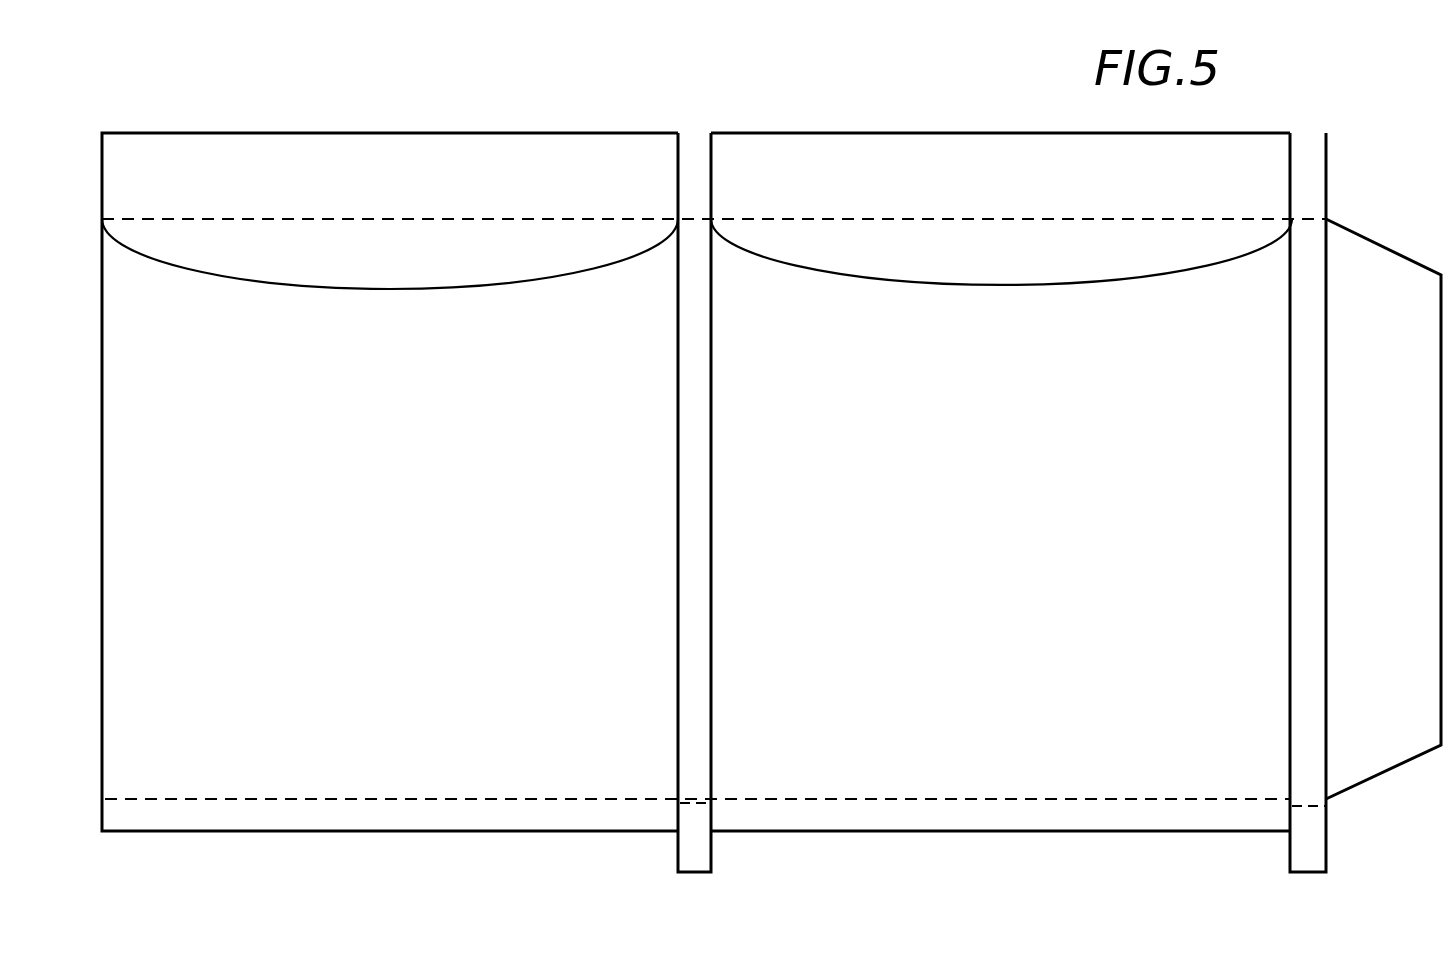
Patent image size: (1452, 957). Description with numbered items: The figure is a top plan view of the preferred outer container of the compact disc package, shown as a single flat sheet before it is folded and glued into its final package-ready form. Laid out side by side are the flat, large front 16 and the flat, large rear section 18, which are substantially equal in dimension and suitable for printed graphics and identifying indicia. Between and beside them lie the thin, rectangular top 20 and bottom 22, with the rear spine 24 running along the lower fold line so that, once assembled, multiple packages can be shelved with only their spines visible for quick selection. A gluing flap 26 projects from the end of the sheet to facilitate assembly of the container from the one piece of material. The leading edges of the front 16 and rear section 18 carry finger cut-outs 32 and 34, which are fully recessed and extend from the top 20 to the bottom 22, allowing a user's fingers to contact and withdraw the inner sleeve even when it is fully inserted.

The front 16 is at (389, 545).
The rear section 18 is at (996, 549).
The top 20 is at (697, 719).
The bottom 22 is at (1303, 639).
The rear spine 24 is at (607, 822).
The gluing flap 26 is at (1360, 665).
The cut-out 32 is at (409, 288).
The cut-out 34 is at (1012, 283).